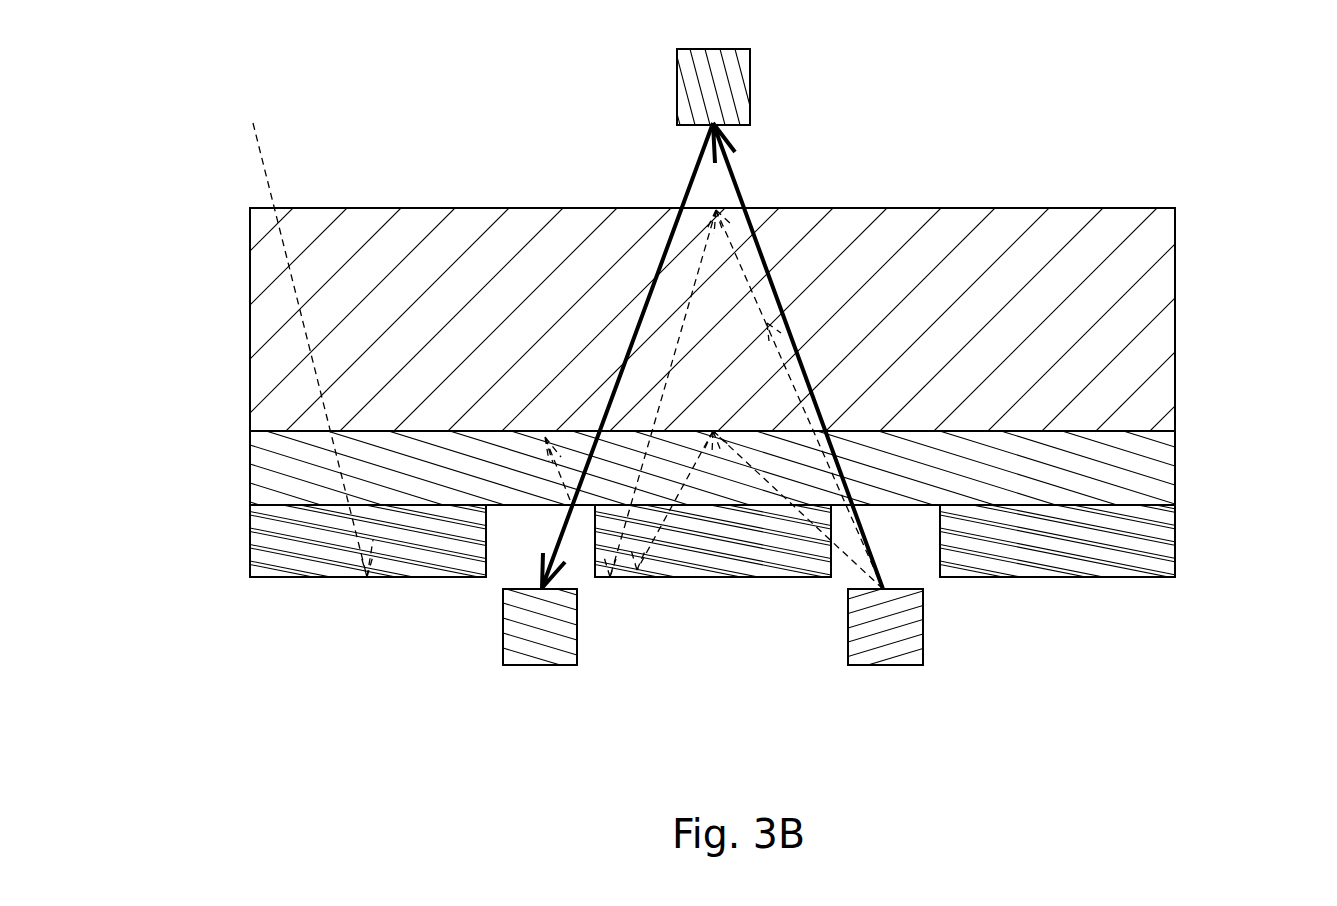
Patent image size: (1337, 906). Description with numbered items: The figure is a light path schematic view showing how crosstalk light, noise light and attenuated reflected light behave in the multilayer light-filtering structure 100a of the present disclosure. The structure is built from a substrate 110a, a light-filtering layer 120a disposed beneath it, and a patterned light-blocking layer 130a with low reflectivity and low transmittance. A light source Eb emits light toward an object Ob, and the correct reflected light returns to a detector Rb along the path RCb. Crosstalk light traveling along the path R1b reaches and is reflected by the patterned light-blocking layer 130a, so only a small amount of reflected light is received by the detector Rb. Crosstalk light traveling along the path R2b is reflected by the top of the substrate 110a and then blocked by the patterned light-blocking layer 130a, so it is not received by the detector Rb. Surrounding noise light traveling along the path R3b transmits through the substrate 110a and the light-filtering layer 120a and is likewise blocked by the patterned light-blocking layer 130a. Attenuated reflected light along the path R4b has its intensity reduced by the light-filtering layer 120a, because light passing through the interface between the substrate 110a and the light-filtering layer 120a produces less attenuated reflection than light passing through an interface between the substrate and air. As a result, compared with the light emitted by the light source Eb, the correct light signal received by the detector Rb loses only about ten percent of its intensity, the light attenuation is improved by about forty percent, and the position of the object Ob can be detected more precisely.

The multilayer light-filtering structure 100a is at (116, 59).
The substrate 110a is at (1175, 322).
The light-filtering layer 120a is at (1175, 470).
The patterned light-blocking layer 130a is at (268, 580).
The object Ob is at (750, 85).
The light source Eb is at (883, 665).
The detector Rb is at (540, 665).
The path of correct light RCb is at (660, 260).
The path of crosstalk light R1b is at (776, 490).
The path of crosstalk light R2b is at (767, 323).
The path of surrounding noise light R3b is at (305, 325).
The path of attenuated reflected light R4b is at (540, 470).